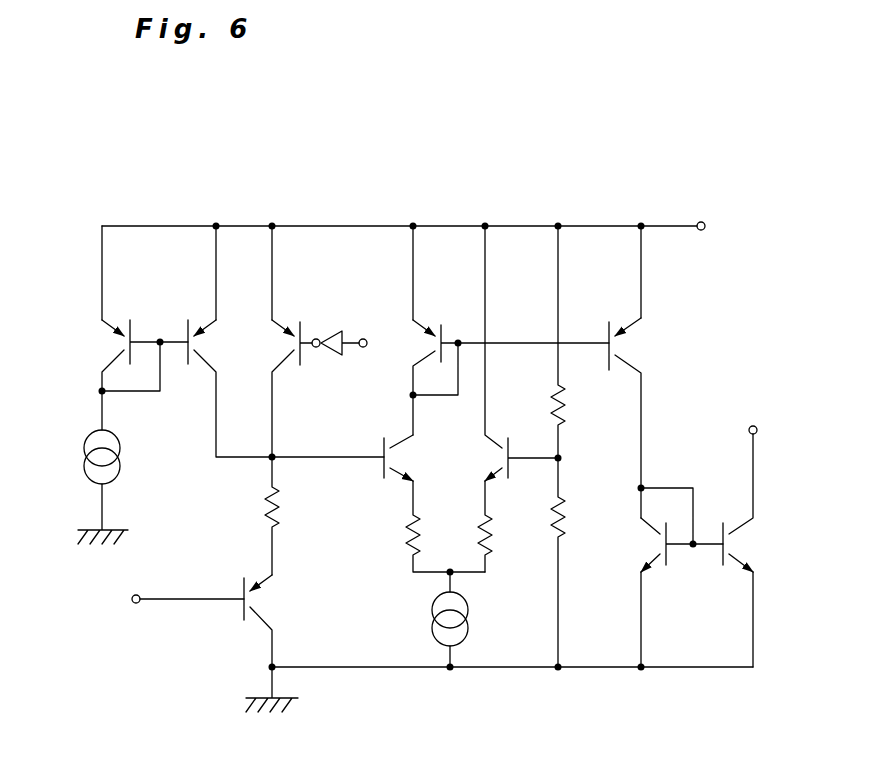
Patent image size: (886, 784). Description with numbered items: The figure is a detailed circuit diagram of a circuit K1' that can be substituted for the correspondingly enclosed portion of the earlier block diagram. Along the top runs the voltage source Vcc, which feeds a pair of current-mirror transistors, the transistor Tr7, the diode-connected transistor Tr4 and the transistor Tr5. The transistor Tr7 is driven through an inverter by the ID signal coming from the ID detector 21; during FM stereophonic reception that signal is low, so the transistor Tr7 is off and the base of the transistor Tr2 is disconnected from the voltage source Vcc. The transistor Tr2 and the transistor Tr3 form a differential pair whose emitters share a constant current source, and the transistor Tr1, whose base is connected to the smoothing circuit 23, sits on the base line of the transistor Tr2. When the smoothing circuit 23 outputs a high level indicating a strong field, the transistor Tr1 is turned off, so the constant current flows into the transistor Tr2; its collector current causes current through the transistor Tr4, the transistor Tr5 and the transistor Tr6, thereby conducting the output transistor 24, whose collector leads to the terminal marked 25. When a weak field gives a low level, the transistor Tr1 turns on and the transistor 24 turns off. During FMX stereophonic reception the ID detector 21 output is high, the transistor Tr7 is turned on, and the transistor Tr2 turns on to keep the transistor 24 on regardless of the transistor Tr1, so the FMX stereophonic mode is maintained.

The transistor Tr1 is at (255, 581).
The transistor Tr2 is at (398, 446).
The transistor Tr3 is at (492, 447).
The transistor Tr4 is at (436, 334).
The transistor Tr5 is at (617, 331).
The transistor Tr6 is at (652, 527).
The transistor Tr7 is at (278, 325).
The transistor 24 is at (741, 531).
The circuit K1' is at (613, 120).
The ID detector signal ID is at (342, 335).
The ID detector 21 is at (372, 381).
The smoothing circuit 23 is at (145, 603).
The terminal to 25 is at (751, 414).
The voltage source Vcc is at (714, 216).